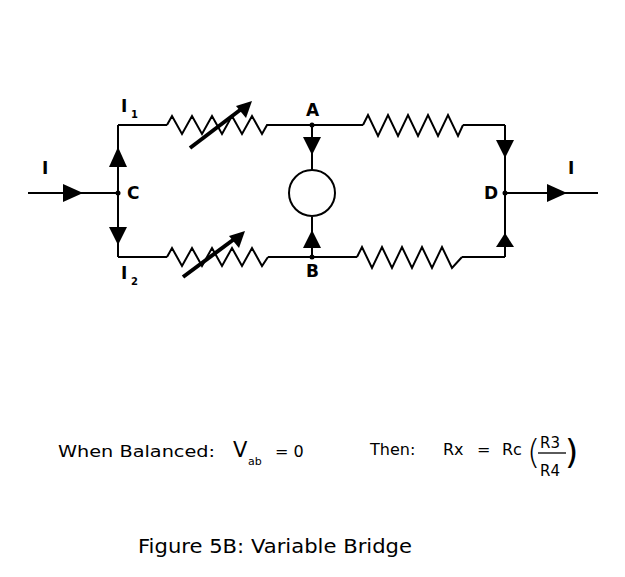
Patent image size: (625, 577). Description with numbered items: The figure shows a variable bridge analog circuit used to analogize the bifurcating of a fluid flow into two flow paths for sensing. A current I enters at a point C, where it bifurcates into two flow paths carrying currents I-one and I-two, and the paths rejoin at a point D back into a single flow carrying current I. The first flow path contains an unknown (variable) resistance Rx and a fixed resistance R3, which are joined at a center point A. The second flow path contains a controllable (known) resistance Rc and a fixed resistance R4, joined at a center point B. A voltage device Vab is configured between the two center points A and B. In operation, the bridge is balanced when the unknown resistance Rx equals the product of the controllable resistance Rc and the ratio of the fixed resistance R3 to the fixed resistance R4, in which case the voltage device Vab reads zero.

The unknown (variable) resistance Rx is at (216, 88).
The controllable (known) resistance Rc is at (217, 317).
The fixed resistance R3 is at (412, 95).
The fixed resistance R4 is at (422, 289).
The voltage device Vab is at (312, 193).